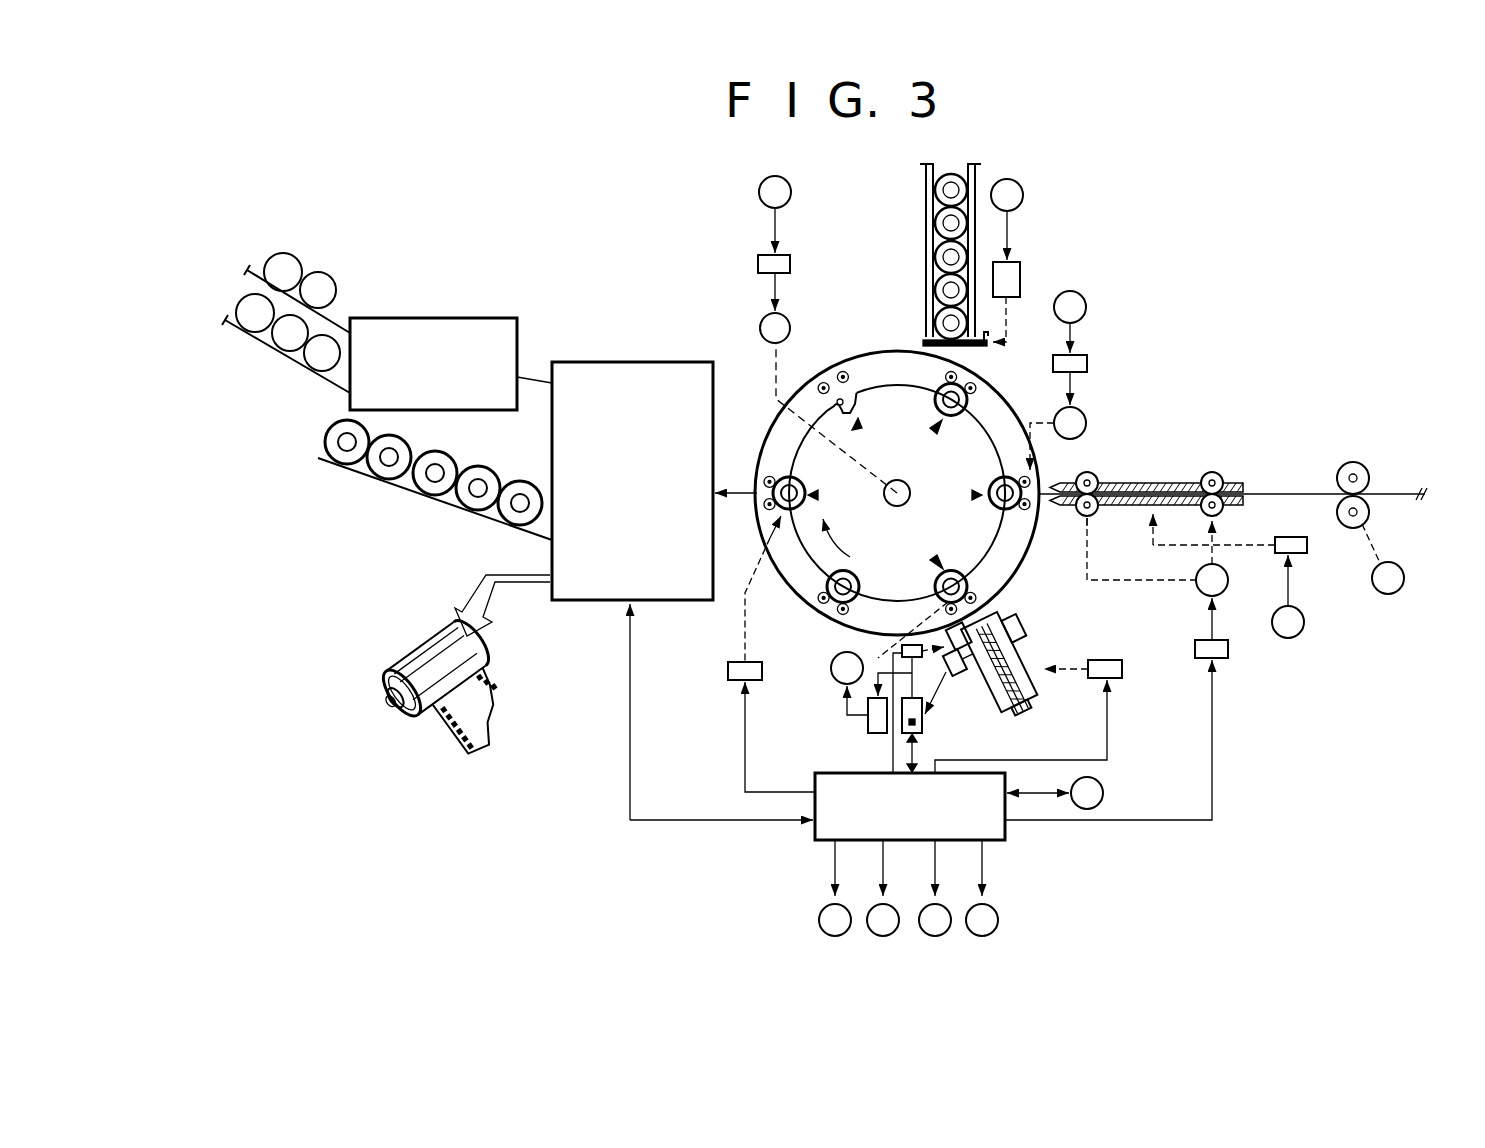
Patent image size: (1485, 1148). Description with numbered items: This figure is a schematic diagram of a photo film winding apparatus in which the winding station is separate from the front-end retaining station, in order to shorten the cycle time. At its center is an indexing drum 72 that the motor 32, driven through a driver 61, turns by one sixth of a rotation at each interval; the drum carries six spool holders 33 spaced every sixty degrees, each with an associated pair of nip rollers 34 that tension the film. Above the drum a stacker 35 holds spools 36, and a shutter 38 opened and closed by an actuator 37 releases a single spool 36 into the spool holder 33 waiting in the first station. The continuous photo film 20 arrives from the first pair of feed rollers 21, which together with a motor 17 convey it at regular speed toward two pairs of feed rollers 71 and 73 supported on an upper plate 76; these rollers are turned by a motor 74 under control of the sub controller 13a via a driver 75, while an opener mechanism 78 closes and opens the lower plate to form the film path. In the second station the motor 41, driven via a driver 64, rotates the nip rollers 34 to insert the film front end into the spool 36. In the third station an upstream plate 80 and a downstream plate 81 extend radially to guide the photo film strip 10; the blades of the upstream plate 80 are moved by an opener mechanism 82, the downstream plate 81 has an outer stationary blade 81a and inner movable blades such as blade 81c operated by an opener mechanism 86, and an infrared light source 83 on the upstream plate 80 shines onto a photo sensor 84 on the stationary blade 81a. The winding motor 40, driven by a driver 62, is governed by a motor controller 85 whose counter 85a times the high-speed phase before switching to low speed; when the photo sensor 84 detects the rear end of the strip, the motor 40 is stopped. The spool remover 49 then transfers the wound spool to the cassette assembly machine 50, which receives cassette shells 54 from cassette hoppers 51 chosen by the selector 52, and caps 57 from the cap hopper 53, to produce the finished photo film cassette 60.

The photo film strip 10 is at (478, 700).
The sub controller 13a is at (815, 830).
The motor 17 is at (1405, 578).
The continuous photo film 20 is at (1393, 488).
The first pair of feed rollers 21 is at (1342, 465).
The motor 32 is at (760, 330).
The spool holders 33 is at (857, 403).
The nip rollers 34 is at (840, 371).
The stacker 35 is at (926, 244).
The spool 36 is at (936, 192).
The actuator 37 is at (1020, 280).
The shutter 38 is at (983, 348).
The motor 40 is at (831, 668).
The motor 41 is at (1087, 422).
The spool remover 49 is at (728, 668).
The cassette assembly machine 50 is at (628, 362).
The cassette hoppers 51 is at (246, 274).
The selector 52 is at (433, 318).
The cap hopper 53 is at (362, 478).
The cassette shell 54 is at (296, 259).
The caps 57 is at (343, 440).
The photo film cassette 60 is at (394, 724).
The driver 61 is at (758, 264).
The driver 62 is at (868, 733).
The driver 64 is at (1088, 363).
The feed rollers 71 is at (1217, 470).
The indexing drum 72 is at (872, 350).
The feed rollers 73 is at (1078, 514).
The motor 74 is at (1197, 590).
The driver 75 is at (1195, 650).
The upper plate 76 is at (1158, 482).
The opener mechanism 78 is at (1308, 548).
The upstream plate 80 is at (1030, 656).
The downstream plate 81 is at (1012, 714).
The outer stationary blade 81a is at (1024, 708).
The inner movable blade 81c is at (990, 620).
The opener mechanism 82 is at (1122, 672).
The infrared light source 83 is at (1028, 626).
The photo sensor 84 is at (952, 683).
The motor controller 85 is at (923, 722).
The counter 85a is at (925, 731).
The opener mechanism 86 is at (908, 645).